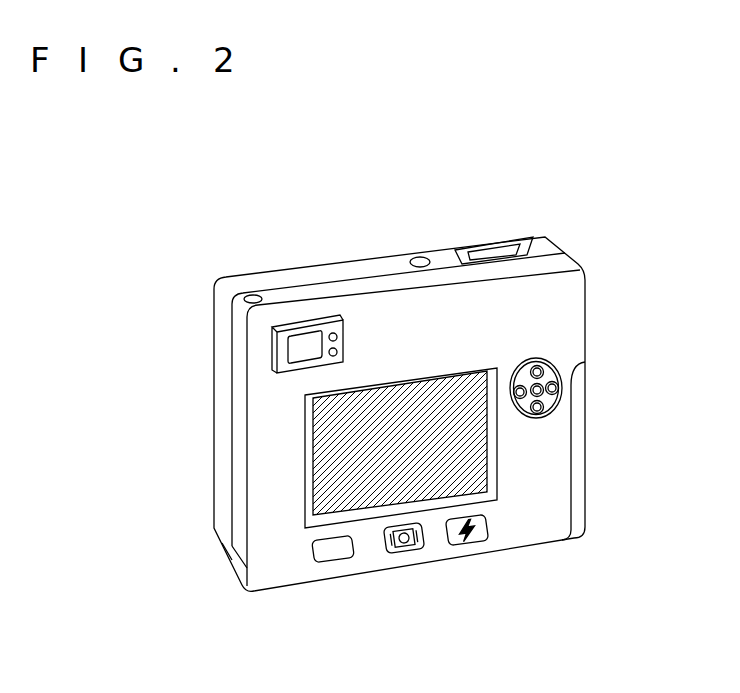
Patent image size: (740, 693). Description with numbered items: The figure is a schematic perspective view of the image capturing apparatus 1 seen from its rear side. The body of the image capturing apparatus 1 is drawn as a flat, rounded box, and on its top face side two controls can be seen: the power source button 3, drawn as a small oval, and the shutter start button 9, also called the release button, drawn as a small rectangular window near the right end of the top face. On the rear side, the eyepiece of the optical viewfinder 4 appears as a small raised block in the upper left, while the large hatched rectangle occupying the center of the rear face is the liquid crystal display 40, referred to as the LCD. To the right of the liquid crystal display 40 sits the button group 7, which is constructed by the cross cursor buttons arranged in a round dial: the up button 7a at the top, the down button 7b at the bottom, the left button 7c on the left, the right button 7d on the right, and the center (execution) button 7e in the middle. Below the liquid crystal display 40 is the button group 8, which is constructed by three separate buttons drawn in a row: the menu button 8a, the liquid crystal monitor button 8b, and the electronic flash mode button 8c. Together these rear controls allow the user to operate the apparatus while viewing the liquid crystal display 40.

The image capturing apparatus 1 is at (565, 215).
The power source button 3 is at (420, 257).
The optical viewfinder 4 is at (307, 353).
The button group 7 is at (603, 398).
The up button 7a is at (542, 367).
The down button 7b is at (545, 409).
The left button 7c is at (520, 400).
The right button 7d is at (558, 389).
The center (execution) button 7e is at (543, 395).
The button group 8 is at (411, 576).
The menu button 8a is at (342, 561).
The liquid crystal monitor button 8b is at (410, 552).
The electronic flash mode button 8c is at (472, 552).
The shutter start button 9 is at (487, 245).
The liquid crystal display 40 is at (352, 457).